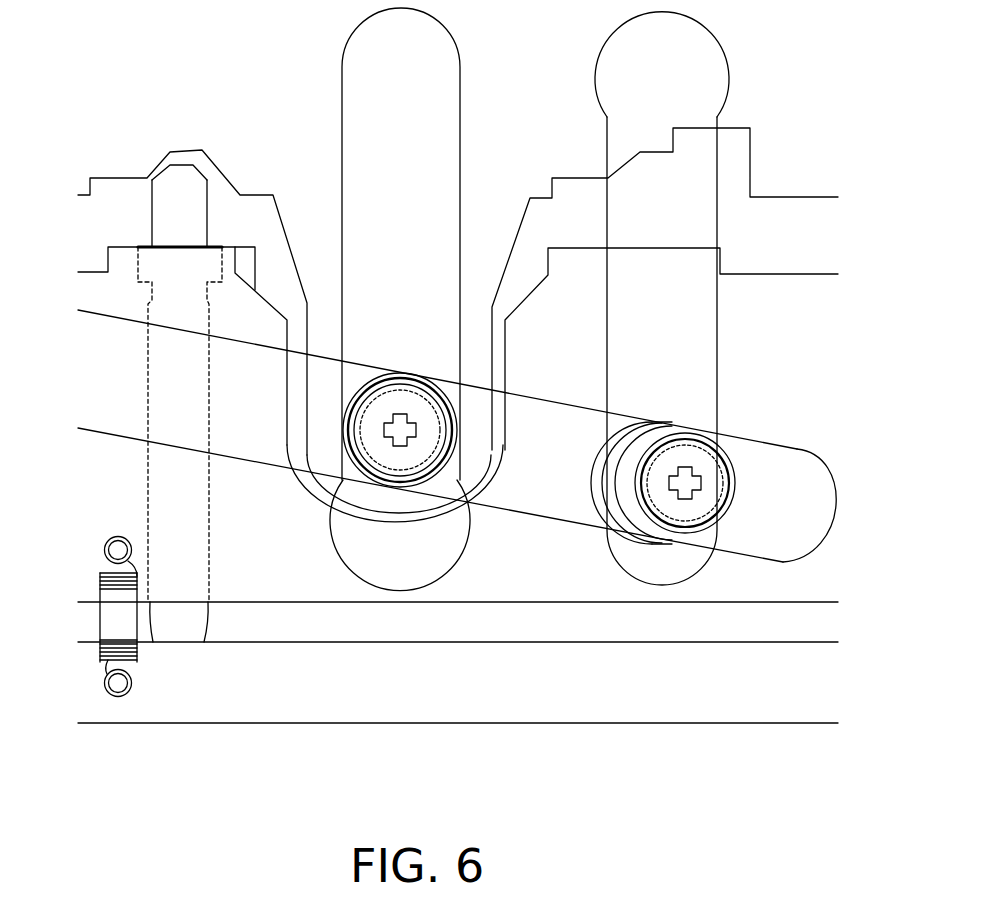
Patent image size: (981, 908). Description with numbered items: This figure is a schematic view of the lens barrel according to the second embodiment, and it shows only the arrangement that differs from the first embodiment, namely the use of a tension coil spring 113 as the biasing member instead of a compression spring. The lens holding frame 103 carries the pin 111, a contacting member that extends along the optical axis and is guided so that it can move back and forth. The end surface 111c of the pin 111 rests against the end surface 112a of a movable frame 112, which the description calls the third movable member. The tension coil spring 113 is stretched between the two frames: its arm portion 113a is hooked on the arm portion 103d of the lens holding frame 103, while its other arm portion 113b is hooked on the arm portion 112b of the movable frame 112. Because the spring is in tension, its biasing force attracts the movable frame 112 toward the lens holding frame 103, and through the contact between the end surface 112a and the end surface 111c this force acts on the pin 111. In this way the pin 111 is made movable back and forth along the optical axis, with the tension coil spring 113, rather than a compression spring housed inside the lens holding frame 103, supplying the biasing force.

The lens holding frame 103 is at (267, 587).
The arm portion of the lens holding frame 103d is at (107, 552).
The pin 111 is at (168, 228).
The end surface of the pin 111c is at (187, 642).
The movable frame 112 is at (100, 715).
The end surface of the movable frame 112a is at (221, 652).
The arm portion of the movable frame 112b is at (110, 673).
The tension coil spring 113 is at (100, 588).
The arm portion of the tension coil spring 113a is at (115, 535).
The arm portion of the tension coil spring 113b is at (135, 683).